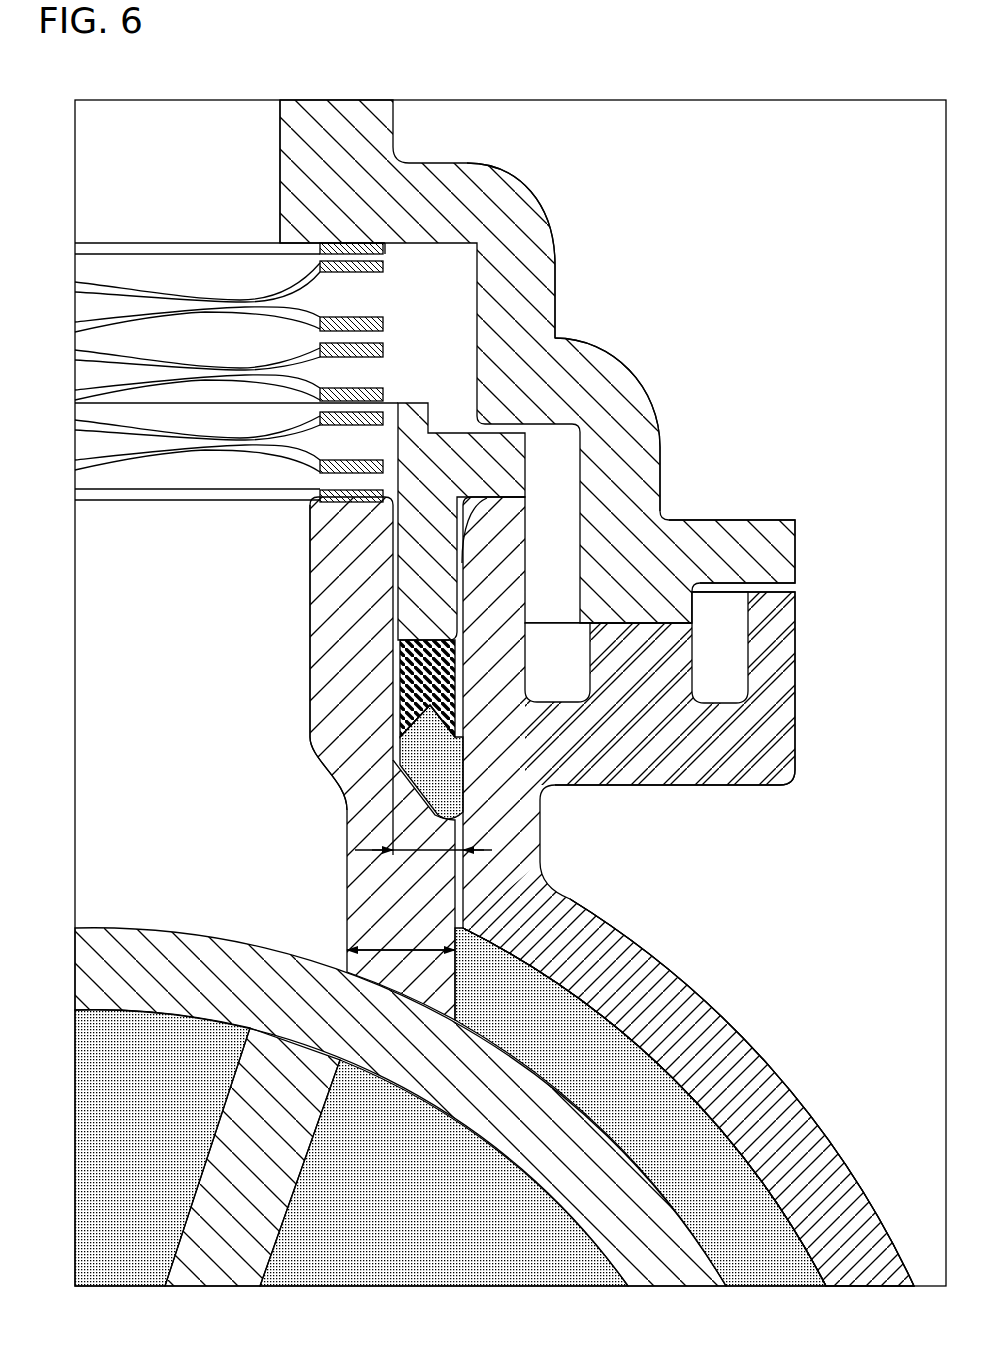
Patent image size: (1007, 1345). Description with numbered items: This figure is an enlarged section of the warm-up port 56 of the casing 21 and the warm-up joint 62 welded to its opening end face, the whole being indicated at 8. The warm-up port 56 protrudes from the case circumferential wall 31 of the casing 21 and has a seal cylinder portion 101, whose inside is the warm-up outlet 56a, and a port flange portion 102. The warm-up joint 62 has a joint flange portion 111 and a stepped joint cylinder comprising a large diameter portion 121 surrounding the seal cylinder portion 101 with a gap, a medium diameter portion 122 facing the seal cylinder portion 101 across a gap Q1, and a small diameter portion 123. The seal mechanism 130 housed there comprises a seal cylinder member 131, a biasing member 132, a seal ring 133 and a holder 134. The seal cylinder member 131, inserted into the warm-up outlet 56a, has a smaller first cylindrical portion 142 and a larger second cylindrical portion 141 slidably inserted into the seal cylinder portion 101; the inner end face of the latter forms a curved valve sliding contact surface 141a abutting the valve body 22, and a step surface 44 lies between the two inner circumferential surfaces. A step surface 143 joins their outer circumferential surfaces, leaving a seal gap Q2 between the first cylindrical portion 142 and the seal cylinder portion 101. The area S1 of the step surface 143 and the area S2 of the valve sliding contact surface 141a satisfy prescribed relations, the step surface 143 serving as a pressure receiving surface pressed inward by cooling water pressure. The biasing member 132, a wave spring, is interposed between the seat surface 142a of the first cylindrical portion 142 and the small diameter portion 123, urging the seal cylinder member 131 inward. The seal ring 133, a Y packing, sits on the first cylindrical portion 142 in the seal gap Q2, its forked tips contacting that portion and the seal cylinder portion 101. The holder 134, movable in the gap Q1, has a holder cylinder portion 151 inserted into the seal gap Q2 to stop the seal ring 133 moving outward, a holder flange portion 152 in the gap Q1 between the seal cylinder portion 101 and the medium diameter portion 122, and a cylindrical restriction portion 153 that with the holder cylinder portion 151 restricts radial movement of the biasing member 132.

The motor 8 is at (792, 164).
The casing 21 is at (793, 1001).
The valve body 22 is at (607, 1157).
The case circumferential wall 31 is at (740, 1057).
The step surface 44 is at (340, 783).
The warm-up port 56 is at (806, 677).
The warm-up outlet 56a is at (443, 680).
The warm-up joint 62 is at (400, 128).
The seal cylinder portion 101 is at (483, 533).
The port flange portion 102 is at (780, 725).
The joint flange portion 111 is at (790, 548).
The large diameter portion 121 is at (655, 438).
The medium diameter portion 122 is at (558, 264).
The small diameter portion 123 is at (290, 150).
The seal mechanism 130 is at (131, 236).
The seal cylinder member 131 is at (302, 603).
The biasing member 132 is at (385, 220).
The seal ring 133 is at (410, 663).
The holder 134 is at (534, 453).
The second cylindrical portion 141 is at (590, 920).
The valve sliding contact surface 141a is at (570, 992).
The first cylindrical portion 142 is at (318, 630).
The seat surface 142a is at (328, 490).
The step surface 143 is at (428, 763).
The holder cylinder portion 151 is at (410, 573).
The holder flange portion 152 is at (497, 443).
The restriction portion 153 is at (420, 403).
The gap Q1 is at (500, 482).
The seal gap Q2 is at (440, 710).
The area of the step surface S1 is at (393, 853).
The area of the valve sliding contact surface S2 is at (400, 947).